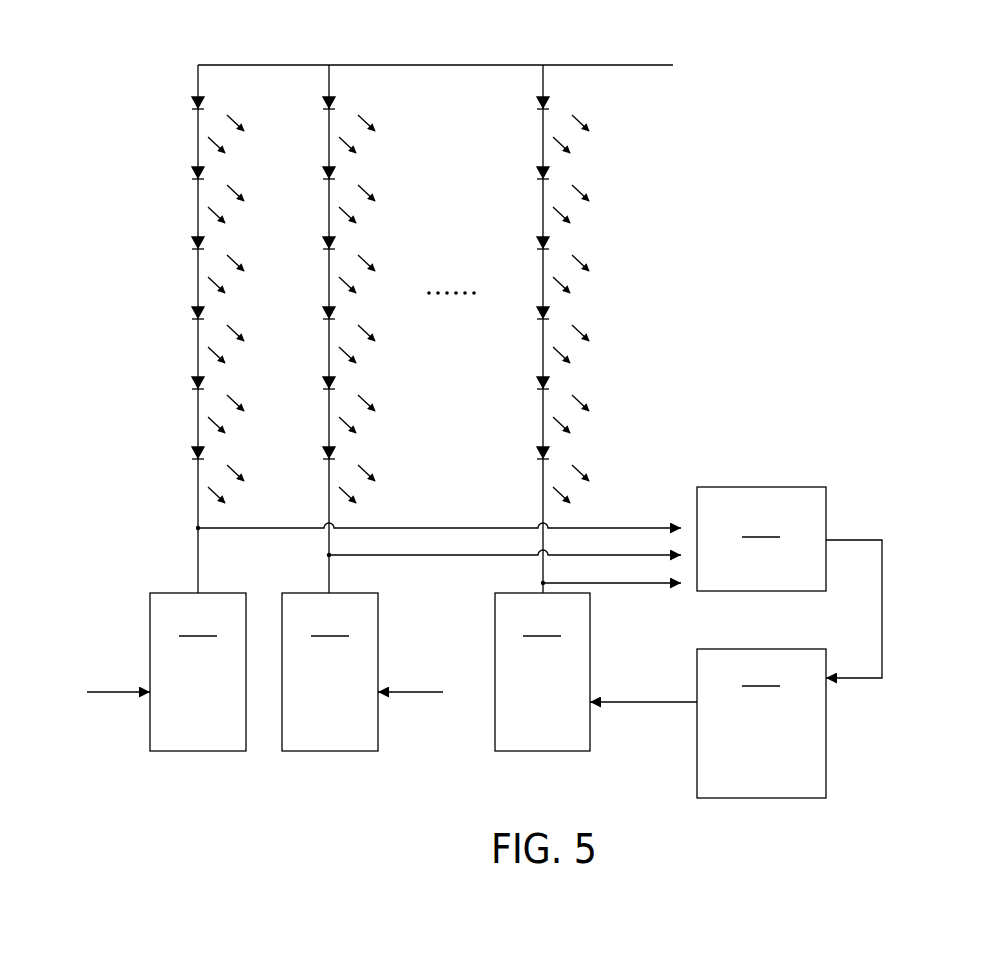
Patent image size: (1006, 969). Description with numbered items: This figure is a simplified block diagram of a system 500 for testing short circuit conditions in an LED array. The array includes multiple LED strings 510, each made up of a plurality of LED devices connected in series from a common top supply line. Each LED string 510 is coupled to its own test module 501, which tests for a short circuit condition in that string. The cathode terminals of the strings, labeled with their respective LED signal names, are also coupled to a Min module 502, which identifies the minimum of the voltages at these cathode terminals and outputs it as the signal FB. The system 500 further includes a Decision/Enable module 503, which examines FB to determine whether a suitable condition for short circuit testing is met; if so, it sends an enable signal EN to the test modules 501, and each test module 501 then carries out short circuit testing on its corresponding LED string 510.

The system 500 is at (902, 85).
The test module 501 is at (370, 672).
The Min module 502 is at (761, 539).
The Decision/Enable module 503 is at (761, 723).
The LED string 510 is at (181, 194).